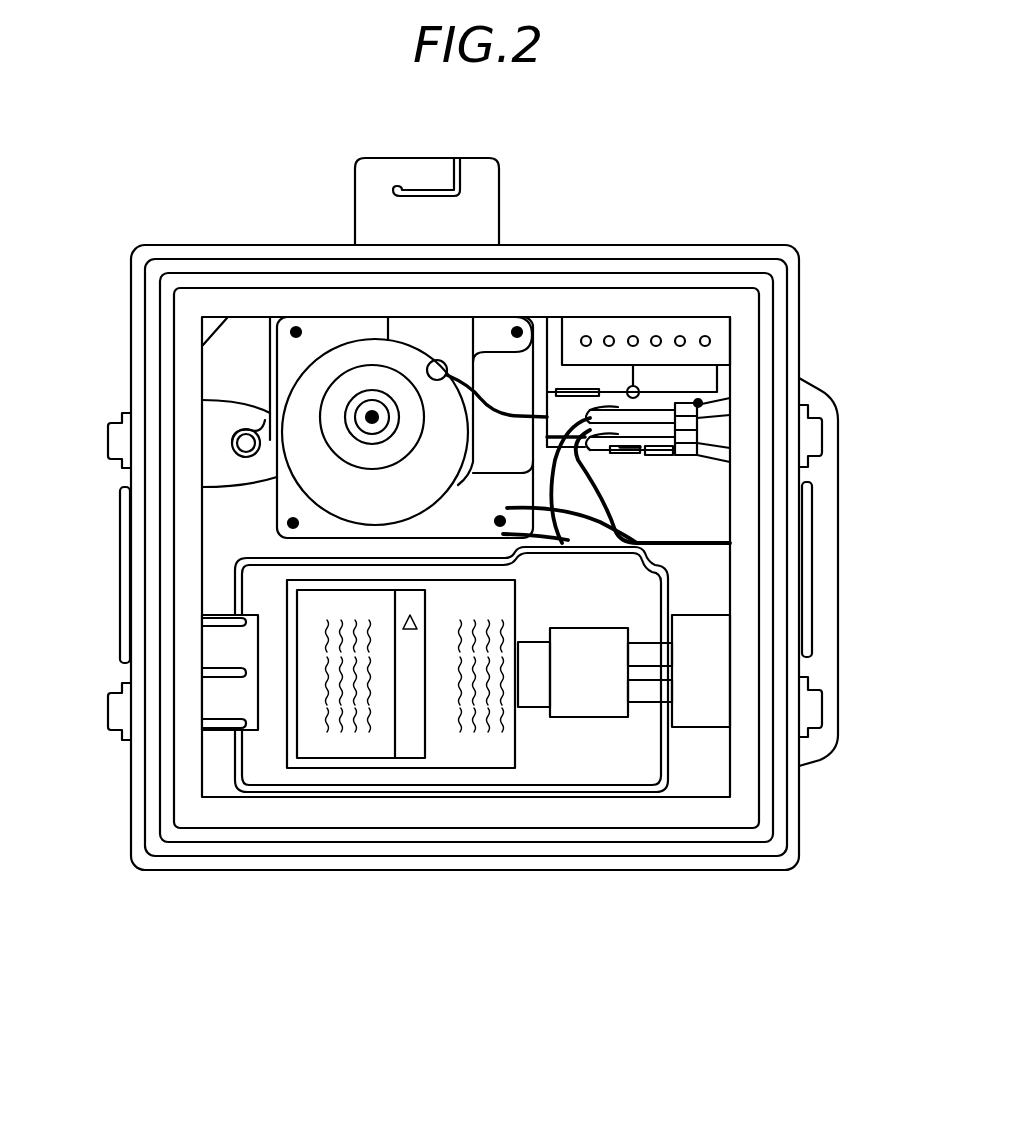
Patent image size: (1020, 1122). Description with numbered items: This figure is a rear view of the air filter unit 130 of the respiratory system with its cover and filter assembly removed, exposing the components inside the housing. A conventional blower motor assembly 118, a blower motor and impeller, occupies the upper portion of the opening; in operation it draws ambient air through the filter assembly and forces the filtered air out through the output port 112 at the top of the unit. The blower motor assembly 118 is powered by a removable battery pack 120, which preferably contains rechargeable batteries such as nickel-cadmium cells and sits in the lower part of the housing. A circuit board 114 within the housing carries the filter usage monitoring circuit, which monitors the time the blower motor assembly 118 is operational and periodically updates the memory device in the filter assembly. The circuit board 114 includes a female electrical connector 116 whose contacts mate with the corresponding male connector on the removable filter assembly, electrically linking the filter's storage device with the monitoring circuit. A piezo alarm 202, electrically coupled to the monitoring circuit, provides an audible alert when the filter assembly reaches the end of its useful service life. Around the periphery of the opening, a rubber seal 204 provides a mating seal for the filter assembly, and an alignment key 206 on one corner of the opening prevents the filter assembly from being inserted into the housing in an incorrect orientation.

The output port 112 is at (503, 212).
The circuit board 114 is at (713, 400).
The electrical connector 116 is at (663, 326).
The blower motor assembly 118 is at (467, 487).
The battery pack 120 is at (258, 792).
The air filter unit 130 is at (126, 298).
The piezo alarm 202 is at (430, 362).
The rubber seal 204 is at (688, 813).
The alignment key 206 is at (222, 339).